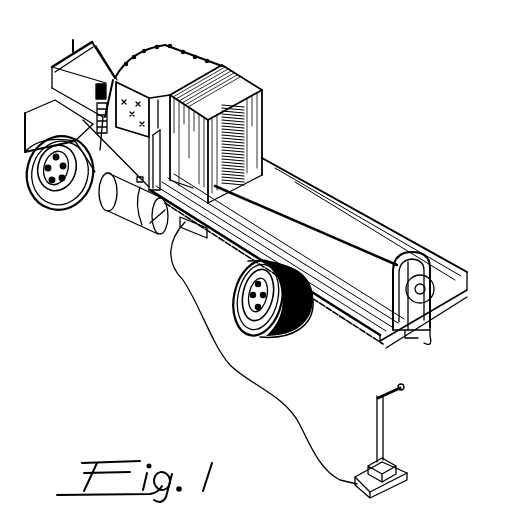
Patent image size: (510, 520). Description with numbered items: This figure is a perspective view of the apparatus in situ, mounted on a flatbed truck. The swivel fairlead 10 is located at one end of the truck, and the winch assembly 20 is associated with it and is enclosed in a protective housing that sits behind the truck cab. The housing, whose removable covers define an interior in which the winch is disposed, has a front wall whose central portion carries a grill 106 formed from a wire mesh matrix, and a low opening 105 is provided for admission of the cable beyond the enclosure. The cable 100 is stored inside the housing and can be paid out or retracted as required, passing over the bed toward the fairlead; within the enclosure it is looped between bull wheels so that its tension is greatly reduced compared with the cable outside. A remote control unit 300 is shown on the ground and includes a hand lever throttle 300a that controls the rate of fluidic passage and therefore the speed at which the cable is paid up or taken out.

The swivel fairlead 10 is at (410, 232).
The winch assembly 20 is at (251, 70).
The cable 100 is at (319, 214).
The low opening 105 is at (264, 190).
The grill 106 is at (225, 125).
The remote control unit 300 is at (400, 430).
The throttle 300a is at (393, 391).